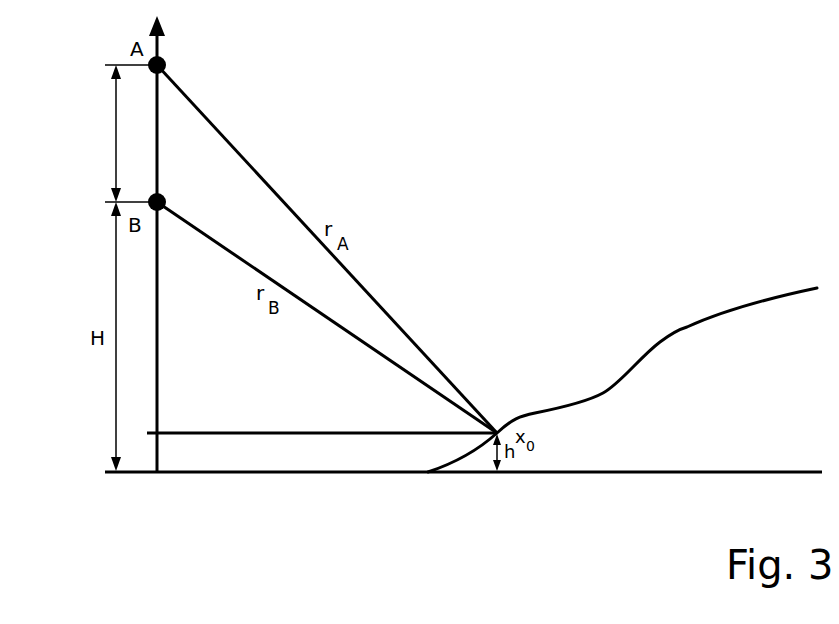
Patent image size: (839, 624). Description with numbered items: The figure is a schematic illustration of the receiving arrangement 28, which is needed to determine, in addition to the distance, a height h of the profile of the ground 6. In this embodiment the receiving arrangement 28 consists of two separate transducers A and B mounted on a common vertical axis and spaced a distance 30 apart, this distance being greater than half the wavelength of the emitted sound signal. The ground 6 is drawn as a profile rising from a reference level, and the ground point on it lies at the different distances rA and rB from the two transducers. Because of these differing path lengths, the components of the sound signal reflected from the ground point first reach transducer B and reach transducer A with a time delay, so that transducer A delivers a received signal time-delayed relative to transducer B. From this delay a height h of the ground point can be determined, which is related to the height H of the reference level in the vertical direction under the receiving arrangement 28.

The receiving arrangement 28 is at (163, 196).
The distance 30 is at (116, 127).
The ground 6 is at (688, 325).